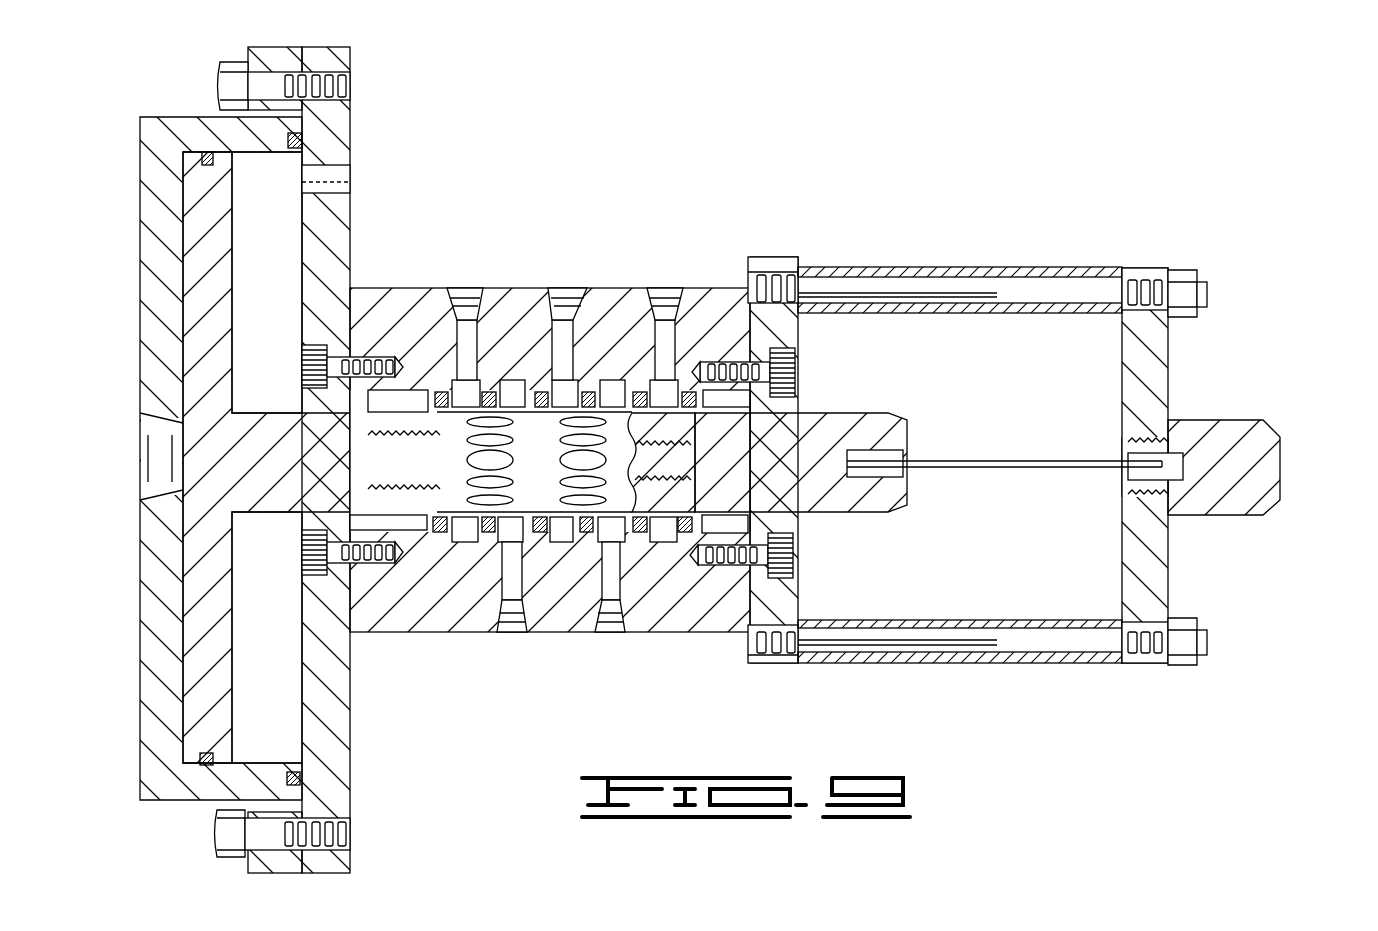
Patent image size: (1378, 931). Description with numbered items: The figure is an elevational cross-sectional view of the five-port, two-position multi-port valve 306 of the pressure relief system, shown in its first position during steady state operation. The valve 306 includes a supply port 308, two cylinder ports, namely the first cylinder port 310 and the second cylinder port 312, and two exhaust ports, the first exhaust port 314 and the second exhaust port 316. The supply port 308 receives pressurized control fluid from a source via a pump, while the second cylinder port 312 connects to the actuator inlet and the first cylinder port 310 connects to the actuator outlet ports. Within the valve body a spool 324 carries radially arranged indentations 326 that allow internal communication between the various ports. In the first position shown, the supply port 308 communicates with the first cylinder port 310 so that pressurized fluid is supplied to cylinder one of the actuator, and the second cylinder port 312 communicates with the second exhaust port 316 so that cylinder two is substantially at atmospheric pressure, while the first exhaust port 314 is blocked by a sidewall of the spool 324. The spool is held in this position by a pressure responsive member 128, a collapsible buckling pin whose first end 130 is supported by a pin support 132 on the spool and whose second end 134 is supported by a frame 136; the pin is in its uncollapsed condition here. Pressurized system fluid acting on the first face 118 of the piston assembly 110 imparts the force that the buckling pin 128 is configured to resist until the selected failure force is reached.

The piston assembly 110 is at (198, 53).
The first face 118 is at (205, 292).
The multi-port valve 306 is at (563, 148).
The E2 exhaust port 316 is at (465, 288).
The supply S port 308 is at (565, 288).
The E1 exhaust port 314 is at (660, 288).
The C2 port 312 is at (513, 633).
The C1 port 310 is at (612, 637).
The indentations 326 is at (498, 460).
The spool 324 is at (548, 490).
The pin support 132 is at (832, 413).
The pressure responsive member 128 is at (948, 452).
The first end 130 is at (920, 468).
The second end 134 is at (1103, 472).
The frame 136 is at (1240, 423).